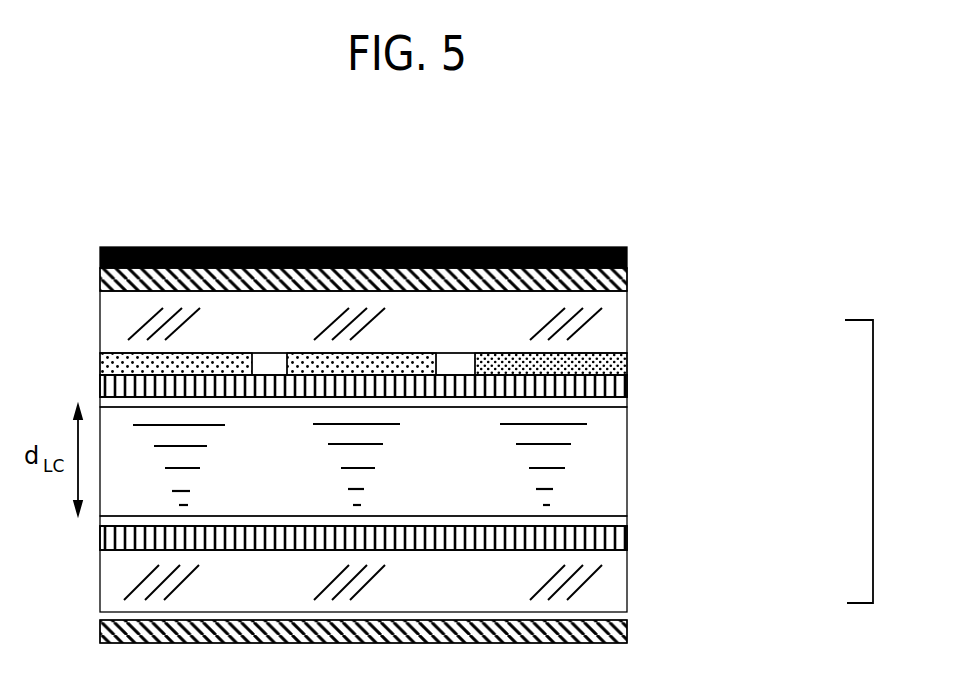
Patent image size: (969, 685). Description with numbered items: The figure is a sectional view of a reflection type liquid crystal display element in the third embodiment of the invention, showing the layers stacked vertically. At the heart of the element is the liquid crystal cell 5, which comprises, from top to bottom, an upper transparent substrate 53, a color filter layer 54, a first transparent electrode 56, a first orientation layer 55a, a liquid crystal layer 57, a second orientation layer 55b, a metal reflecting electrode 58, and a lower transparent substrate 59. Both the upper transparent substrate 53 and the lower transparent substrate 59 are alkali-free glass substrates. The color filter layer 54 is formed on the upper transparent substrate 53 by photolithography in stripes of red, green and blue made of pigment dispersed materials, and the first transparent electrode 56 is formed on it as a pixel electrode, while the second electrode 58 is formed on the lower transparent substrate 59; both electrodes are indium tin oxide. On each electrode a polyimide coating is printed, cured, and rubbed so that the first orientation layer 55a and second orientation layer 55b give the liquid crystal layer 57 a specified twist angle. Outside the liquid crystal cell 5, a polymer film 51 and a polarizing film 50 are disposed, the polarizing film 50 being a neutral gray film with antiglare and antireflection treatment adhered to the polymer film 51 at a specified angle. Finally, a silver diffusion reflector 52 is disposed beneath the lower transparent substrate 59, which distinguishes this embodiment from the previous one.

The liquid crystal cell 5 is at (871, 461).
The polarizing film 50 is at (627, 255).
The polymer film 51 is at (627, 282).
The diffusion reflector 52 is at (627, 628).
The upper transparent substrate 53 is at (612, 323).
The color filter layer 54 is at (627, 365).
The first orientation layer 55a is at (620, 400).
The second orientation layer 55b is at (620, 520).
The first transparent electrode 56 is at (617, 387).
The liquid crystal layer 57 is at (613, 472).
The metal reflecting electrode 58 is at (617, 540).
The lower transparent substrate 59 is at (612, 583).